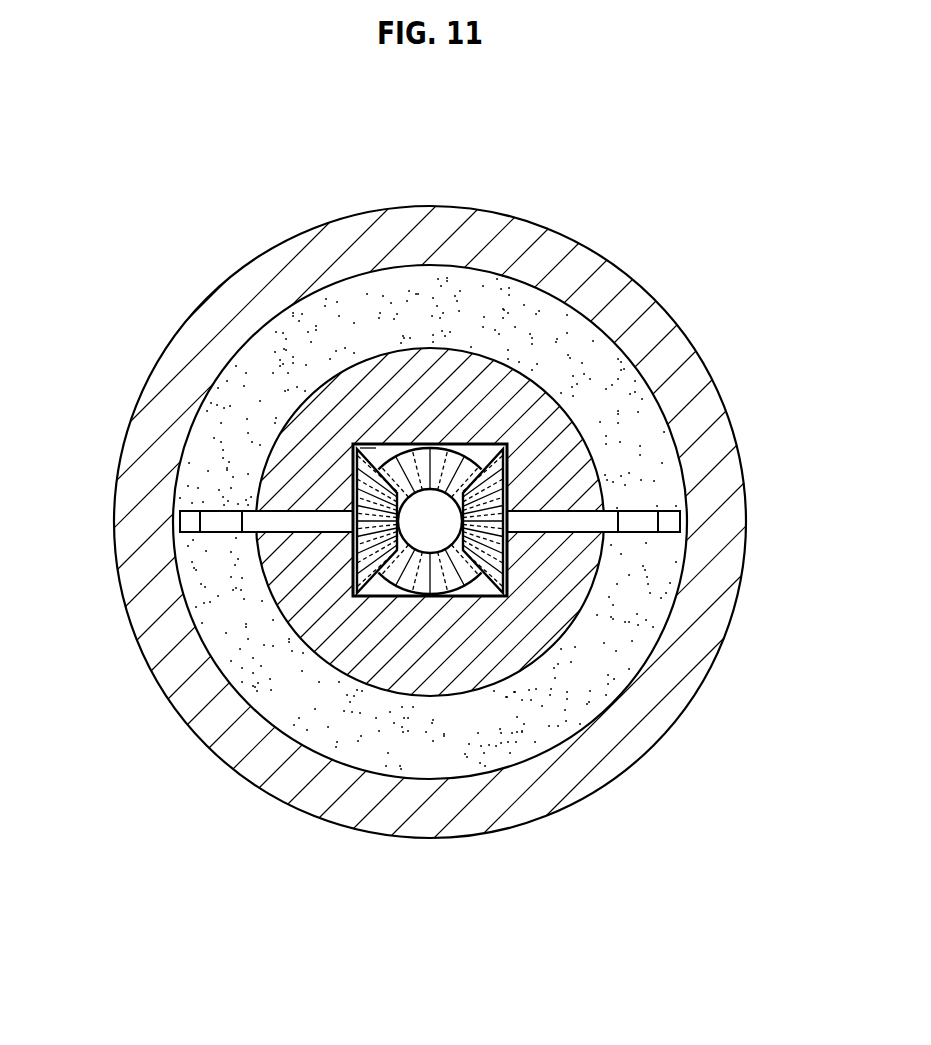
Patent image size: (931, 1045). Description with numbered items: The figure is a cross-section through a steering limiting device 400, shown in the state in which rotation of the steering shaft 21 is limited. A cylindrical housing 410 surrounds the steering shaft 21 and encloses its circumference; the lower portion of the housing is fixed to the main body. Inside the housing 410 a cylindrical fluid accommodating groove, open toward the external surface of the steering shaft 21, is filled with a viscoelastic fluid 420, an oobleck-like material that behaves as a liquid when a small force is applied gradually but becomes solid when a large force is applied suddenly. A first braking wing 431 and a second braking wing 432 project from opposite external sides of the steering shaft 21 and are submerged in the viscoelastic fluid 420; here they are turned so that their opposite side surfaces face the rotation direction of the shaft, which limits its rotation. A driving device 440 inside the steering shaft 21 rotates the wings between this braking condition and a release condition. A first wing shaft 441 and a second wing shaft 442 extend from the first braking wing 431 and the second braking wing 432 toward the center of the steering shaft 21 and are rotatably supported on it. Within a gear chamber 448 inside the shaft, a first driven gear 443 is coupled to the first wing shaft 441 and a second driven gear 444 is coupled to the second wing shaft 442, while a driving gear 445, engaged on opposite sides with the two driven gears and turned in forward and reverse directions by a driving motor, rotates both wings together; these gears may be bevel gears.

The steering limiting device 400 is at (622, 227).
The housing 410 is at (248, 282).
The viscoelastic fluid 420 is at (449, 286).
The steering shaft 21 is at (395, 665).
The driving device 440 is at (372, 612).
The first wing shaft 441 is at (287, 522).
The first braking wing 431 is at (220, 512).
The second braking wing 432 is at (572, 520).
The second wing shaft 442 is at (638, 512).
The first driven gear 443 is at (355, 586).
The second driven gear 444 is at (487, 553).
The driving gear 445 is at (437, 580).
The gear chamber 448 is at (372, 453).